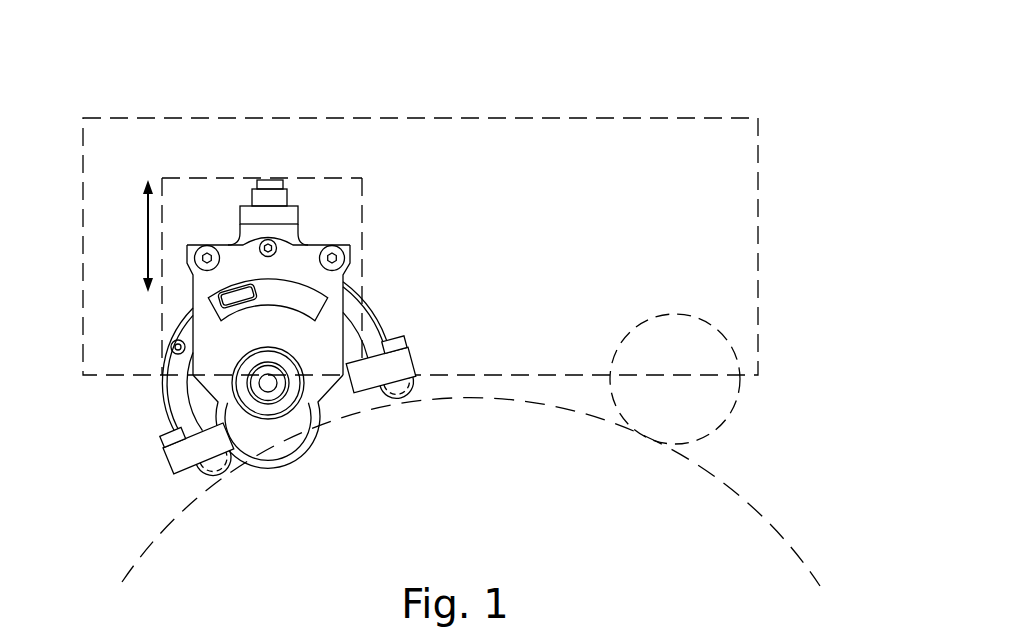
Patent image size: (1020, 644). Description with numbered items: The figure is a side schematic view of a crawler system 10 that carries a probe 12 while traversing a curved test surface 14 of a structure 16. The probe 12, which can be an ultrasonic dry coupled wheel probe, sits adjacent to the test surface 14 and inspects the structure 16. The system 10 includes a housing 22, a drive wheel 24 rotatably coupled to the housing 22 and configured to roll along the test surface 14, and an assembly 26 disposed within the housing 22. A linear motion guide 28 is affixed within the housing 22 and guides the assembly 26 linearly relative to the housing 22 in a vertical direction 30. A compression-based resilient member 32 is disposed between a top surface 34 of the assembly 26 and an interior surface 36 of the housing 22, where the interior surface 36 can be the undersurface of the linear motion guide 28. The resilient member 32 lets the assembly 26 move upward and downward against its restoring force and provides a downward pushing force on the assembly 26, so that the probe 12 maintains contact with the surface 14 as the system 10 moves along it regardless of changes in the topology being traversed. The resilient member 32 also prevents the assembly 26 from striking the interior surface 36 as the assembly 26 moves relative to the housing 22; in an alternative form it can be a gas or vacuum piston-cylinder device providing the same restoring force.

The system 10 is at (557, 72).
The probe 12 is at (297, 438).
The test surface 14 is at (172, 518).
The structure 16 is at (472, 473).
The housing 22 is at (758, 232).
The drive wheel 24 is at (733, 405).
The assembly 26 is at (220, 217).
The linear motion guide 28 is at (363, 210).
The vertical direction 30 is at (147, 213).
The compression-based resilient member 32 is at (267, 178).
The top surface 34 is at (328, 243).
The interior surface 36 is at (236, 178).